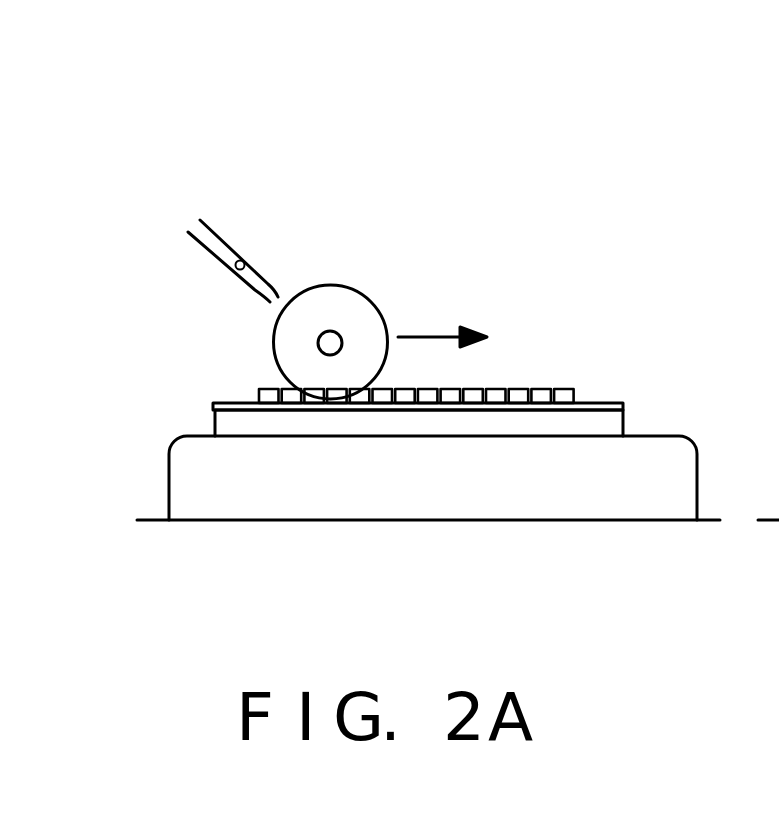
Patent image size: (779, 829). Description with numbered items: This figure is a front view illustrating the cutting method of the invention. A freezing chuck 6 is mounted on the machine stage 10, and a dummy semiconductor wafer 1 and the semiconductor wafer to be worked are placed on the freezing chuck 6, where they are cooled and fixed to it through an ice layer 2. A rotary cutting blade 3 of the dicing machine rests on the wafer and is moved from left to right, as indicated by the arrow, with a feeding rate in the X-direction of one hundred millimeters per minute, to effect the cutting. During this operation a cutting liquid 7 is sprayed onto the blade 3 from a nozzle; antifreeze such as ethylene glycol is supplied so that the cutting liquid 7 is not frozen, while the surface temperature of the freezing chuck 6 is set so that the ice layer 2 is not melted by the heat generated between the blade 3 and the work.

The dummy semiconductor wafer 1 is at (527, 387).
The ice layer 2 is at (213, 408).
The rotary cutting blade 3 is at (352, 308).
The freezing chuck 6 is at (605, 435).
The cutting liquid 7 is at (233, 243).
The machine stage 10 is at (560, 495).